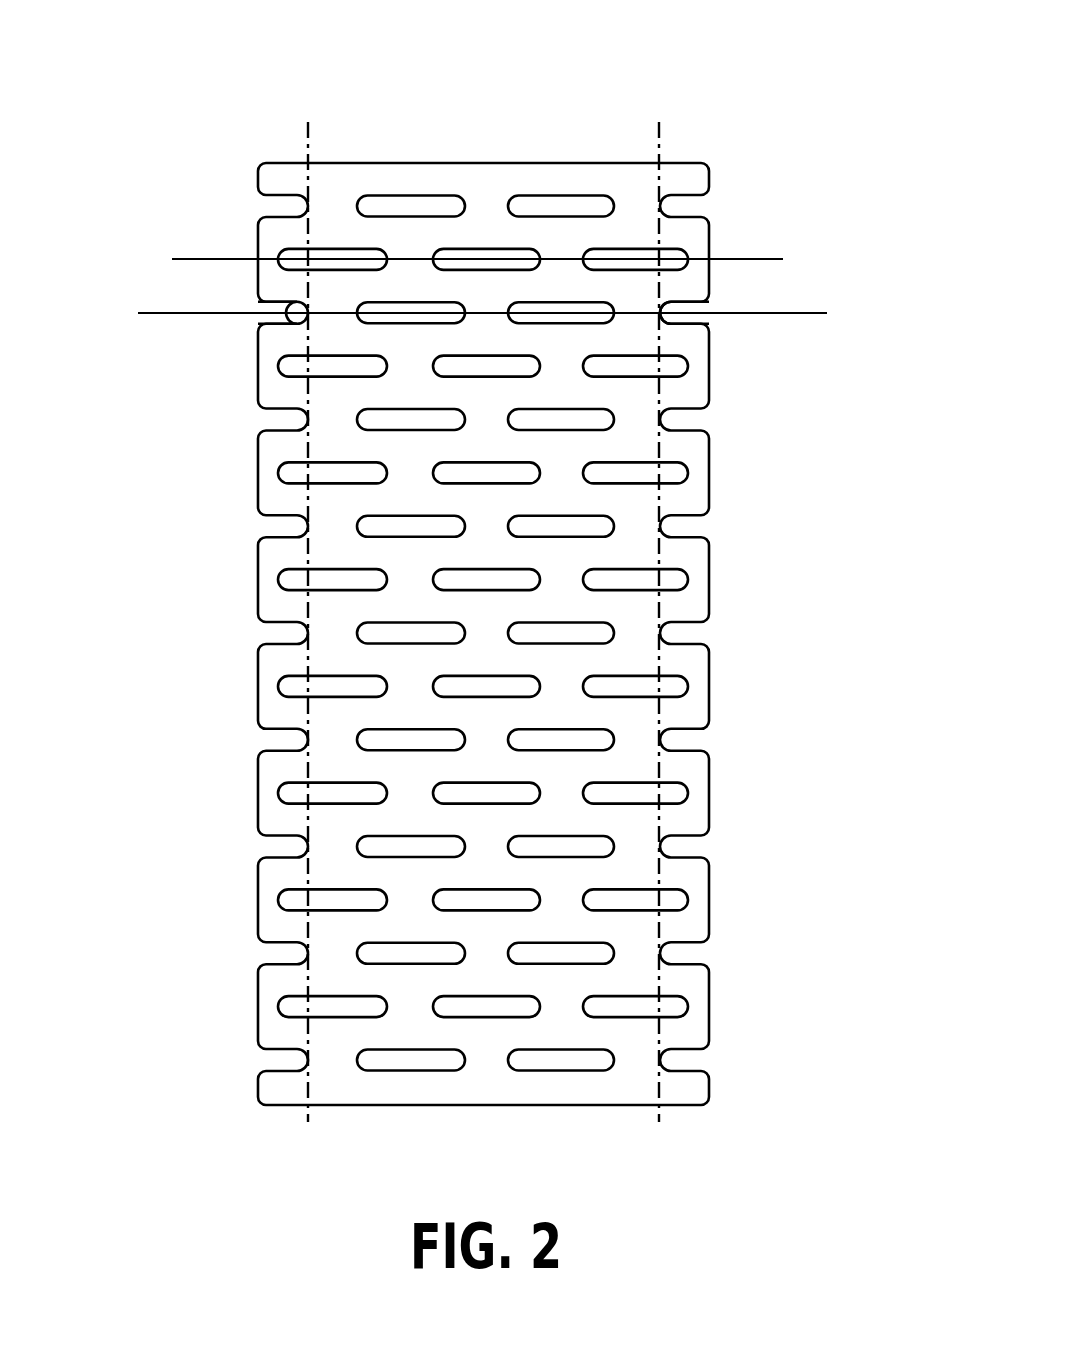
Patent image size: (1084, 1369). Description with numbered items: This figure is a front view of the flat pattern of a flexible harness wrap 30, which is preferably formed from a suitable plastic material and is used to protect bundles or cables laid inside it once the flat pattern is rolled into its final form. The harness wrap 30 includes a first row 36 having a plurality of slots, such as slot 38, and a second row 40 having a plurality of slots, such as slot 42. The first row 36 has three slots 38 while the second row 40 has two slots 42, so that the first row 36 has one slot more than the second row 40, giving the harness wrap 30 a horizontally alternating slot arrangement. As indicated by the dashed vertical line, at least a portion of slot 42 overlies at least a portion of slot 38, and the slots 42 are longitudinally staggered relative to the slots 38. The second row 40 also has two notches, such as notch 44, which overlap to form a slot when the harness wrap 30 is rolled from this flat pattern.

The harness wrap 30 is at (507, 561).
The first row 36 is at (757, 262).
The slot 38 is at (287, 250).
The second row 40 is at (785, 313).
The slot 42 is at (357, 315).
The notch 44 is at (267, 308).